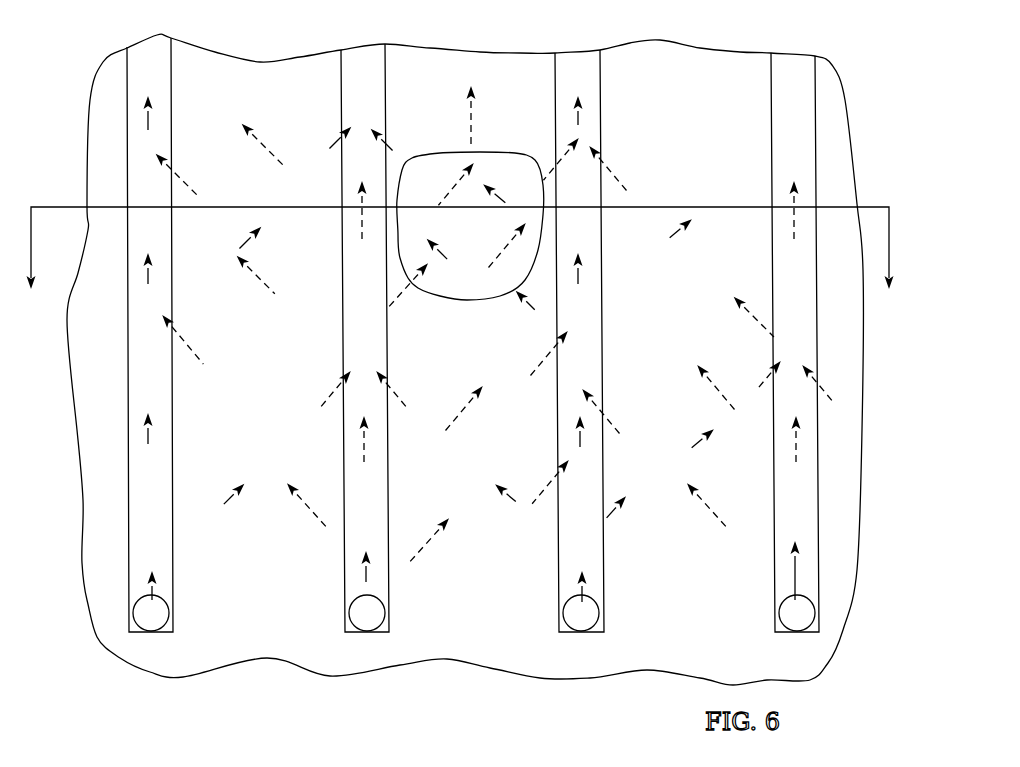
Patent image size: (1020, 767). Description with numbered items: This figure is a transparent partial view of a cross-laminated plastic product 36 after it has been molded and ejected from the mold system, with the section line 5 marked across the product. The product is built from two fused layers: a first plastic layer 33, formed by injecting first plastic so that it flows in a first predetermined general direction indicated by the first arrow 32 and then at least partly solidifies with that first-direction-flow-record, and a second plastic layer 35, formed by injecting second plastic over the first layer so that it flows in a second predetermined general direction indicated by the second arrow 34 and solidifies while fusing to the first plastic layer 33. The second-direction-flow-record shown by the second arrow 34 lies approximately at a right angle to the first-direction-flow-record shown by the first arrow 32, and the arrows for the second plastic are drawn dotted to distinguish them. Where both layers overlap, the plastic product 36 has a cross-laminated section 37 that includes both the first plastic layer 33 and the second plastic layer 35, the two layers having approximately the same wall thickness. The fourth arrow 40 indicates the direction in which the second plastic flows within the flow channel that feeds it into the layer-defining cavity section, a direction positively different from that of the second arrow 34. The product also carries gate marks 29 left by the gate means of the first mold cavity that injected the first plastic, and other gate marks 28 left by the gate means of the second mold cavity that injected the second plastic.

The section line 5- 5 is at (460, 258).
The other gate marks 28 is at (380, 600).
The gate marks 29 is at (590, 600).
The first arrow 32 is at (507, 200).
The first plastic layer 33 is at (497, 282).
The second arrow 34 is at (445, 192).
The second plastic layer 35 is at (470, 280).
The plastic product 36 is at (236, 50).
The cross-laminated section 37 is at (427, 295).
The fourth arrow 40 is at (361, 219).